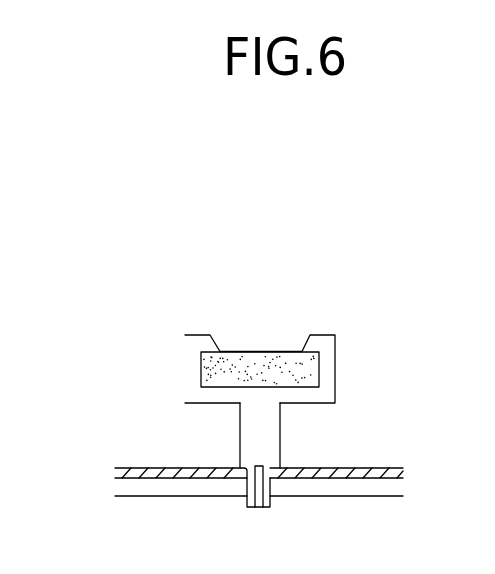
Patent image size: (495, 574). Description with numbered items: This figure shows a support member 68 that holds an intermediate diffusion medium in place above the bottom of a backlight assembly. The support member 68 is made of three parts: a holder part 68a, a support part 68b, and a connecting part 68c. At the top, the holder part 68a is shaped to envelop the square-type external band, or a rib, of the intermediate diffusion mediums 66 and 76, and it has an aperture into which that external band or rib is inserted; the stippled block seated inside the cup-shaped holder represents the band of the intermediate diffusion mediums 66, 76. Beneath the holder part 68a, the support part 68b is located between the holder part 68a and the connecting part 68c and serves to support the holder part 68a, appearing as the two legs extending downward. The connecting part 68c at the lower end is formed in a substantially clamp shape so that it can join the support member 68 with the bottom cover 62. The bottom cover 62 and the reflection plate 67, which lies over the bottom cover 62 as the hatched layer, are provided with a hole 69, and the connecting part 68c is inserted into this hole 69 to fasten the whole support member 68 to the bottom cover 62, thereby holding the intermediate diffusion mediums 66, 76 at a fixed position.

The intermediate diffusion medium 66 is at (261, 362).
The intermediate diffusion medium 76 is at (260, 369).
The support member 68 is at (343, 444).
The holder part 68a is at (323, 372).
The support part 68b is at (272, 420).
The connecting part 68c is at (275, 470).
The reflection plate 67 is at (403, 472).
The bottom cover 62 is at (395, 491).
The hole 69 is at (239, 490).